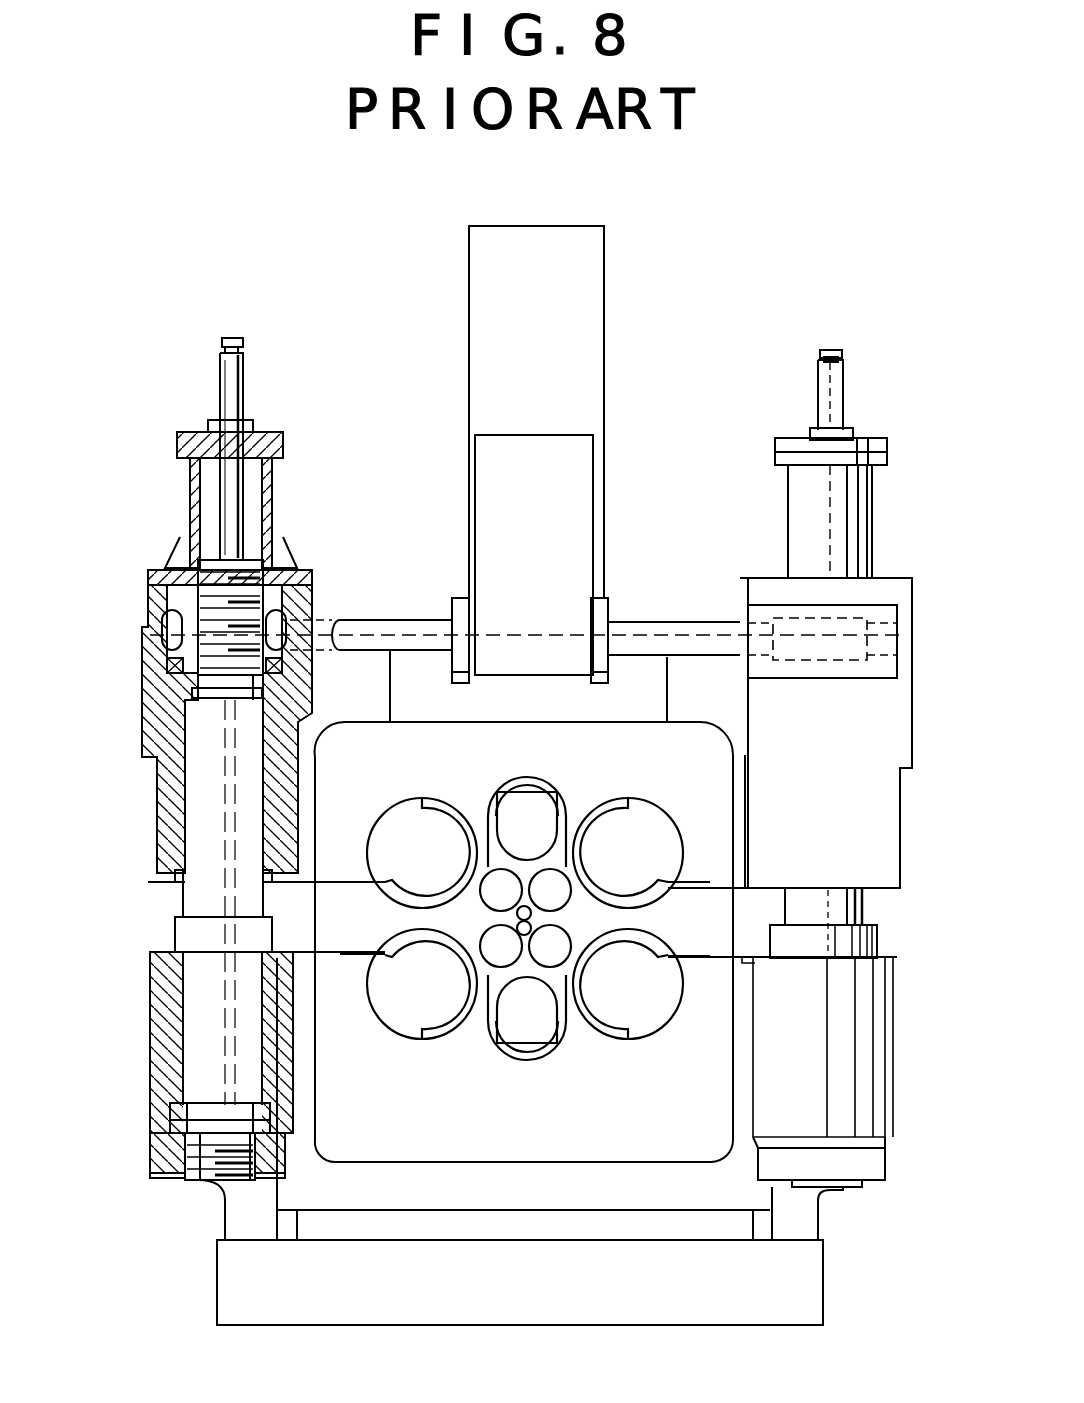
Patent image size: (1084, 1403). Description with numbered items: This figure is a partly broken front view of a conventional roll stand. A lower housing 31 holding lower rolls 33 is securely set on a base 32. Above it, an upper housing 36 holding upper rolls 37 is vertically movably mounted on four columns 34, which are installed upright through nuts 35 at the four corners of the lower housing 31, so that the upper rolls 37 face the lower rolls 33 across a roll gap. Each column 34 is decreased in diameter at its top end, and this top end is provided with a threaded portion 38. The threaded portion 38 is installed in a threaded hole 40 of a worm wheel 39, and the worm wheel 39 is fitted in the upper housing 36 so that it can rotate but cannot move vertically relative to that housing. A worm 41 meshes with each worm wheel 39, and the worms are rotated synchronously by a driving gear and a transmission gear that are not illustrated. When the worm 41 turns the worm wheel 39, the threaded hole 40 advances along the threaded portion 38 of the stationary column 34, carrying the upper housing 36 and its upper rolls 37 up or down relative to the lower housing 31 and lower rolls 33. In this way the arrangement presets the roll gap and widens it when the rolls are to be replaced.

The lower housing 31 is at (617, 1135).
The base 32 is at (485, 1292).
The lower rolls 33 is at (470, 1030).
The columns 34 is at (190, 903).
The nuts 35 is at (167, 1170).
The upper housing 36 is at (142, 738).
The upper rolls 37 is at (580, 800).
The threaded portion 38 is at (235, 560).
The worm wheel 39 is at (285, 612).
The threaded hole 40 is at (195, 645).
The worm 41 is at (783, 618).